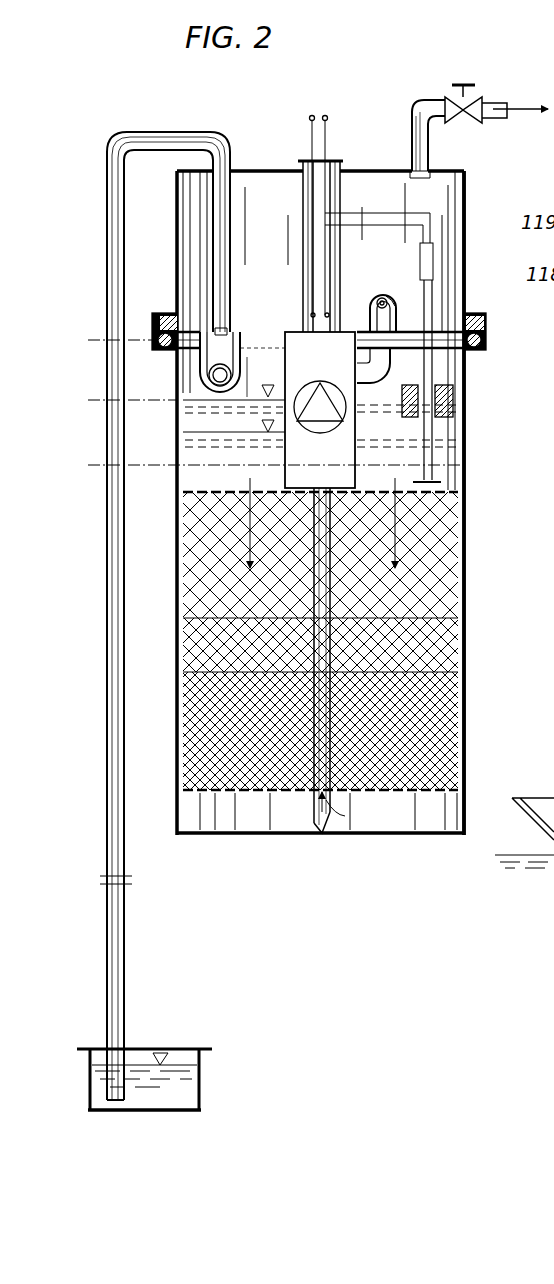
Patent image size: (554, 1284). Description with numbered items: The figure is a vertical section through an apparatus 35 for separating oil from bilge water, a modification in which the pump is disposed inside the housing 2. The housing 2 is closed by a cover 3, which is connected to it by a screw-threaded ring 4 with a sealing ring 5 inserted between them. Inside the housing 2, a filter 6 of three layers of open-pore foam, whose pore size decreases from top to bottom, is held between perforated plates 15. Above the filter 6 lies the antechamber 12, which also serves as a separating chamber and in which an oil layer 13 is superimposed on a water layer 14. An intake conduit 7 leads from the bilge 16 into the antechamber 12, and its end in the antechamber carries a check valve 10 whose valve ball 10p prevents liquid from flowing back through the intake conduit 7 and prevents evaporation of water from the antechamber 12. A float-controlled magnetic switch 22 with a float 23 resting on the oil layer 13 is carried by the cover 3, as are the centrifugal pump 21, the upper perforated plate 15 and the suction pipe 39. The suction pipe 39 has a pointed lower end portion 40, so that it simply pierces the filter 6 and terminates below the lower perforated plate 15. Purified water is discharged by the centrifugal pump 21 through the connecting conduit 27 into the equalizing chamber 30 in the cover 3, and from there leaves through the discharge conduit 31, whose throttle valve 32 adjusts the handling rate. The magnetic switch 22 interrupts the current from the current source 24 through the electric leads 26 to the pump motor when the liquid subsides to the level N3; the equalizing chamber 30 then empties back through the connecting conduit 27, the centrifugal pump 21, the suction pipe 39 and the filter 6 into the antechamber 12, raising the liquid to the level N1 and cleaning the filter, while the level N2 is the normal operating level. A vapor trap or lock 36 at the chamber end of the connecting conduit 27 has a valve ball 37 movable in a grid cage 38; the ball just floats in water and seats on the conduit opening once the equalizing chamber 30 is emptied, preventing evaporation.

The housing 2 is at (176, 607).
The cover 3 is at (175, 220).
The screw-threaded ring 4 is at (166, 314).
The sealing ring 5 is at (158, 340).
The filter 6 is at (222, 652).
The intake conduit 7 is at (120, 932).
The check valve 10 is at (196, 360).
The valve ball 10p is at (215, 376).
The antechamber 12 is at (278, 375).
The oil layer 13 is at (192, 424).
The water layer 14 is at (192, 452).
The perforated plates 15 is at (205, 492).
The bilge 16 is at (203, 1069).
The centrifugal pump 21 is at (331, 366).
The float-controlled magnetic switch 22 is at (437, 425).
The float 23 is at (452, 398).
The current source 24 is at (316, 116).
The electric leads 26 is at (312, 144).
The connecting conduit 27 is at (390, 360).
The equalizing chamber 30 is at (276, 258).
The discharge conduit 31 is at (418, 142).
The throttle valve 32 is at (465, 126).
The apparatus 35 is at (486, 489).
The vapor trap or lock 36 is at (406, 310).
The valve ball 37 is at (378, 298).
The grid cage 38 is at (392, 298).
The suction pipe 39 is at (306, 790).
The pointed lower end portion 40 is at (320, 818).
The level N1 is at (109, 344).
The level N2 is at (121, 405).
The level N3 is at (265, 469).